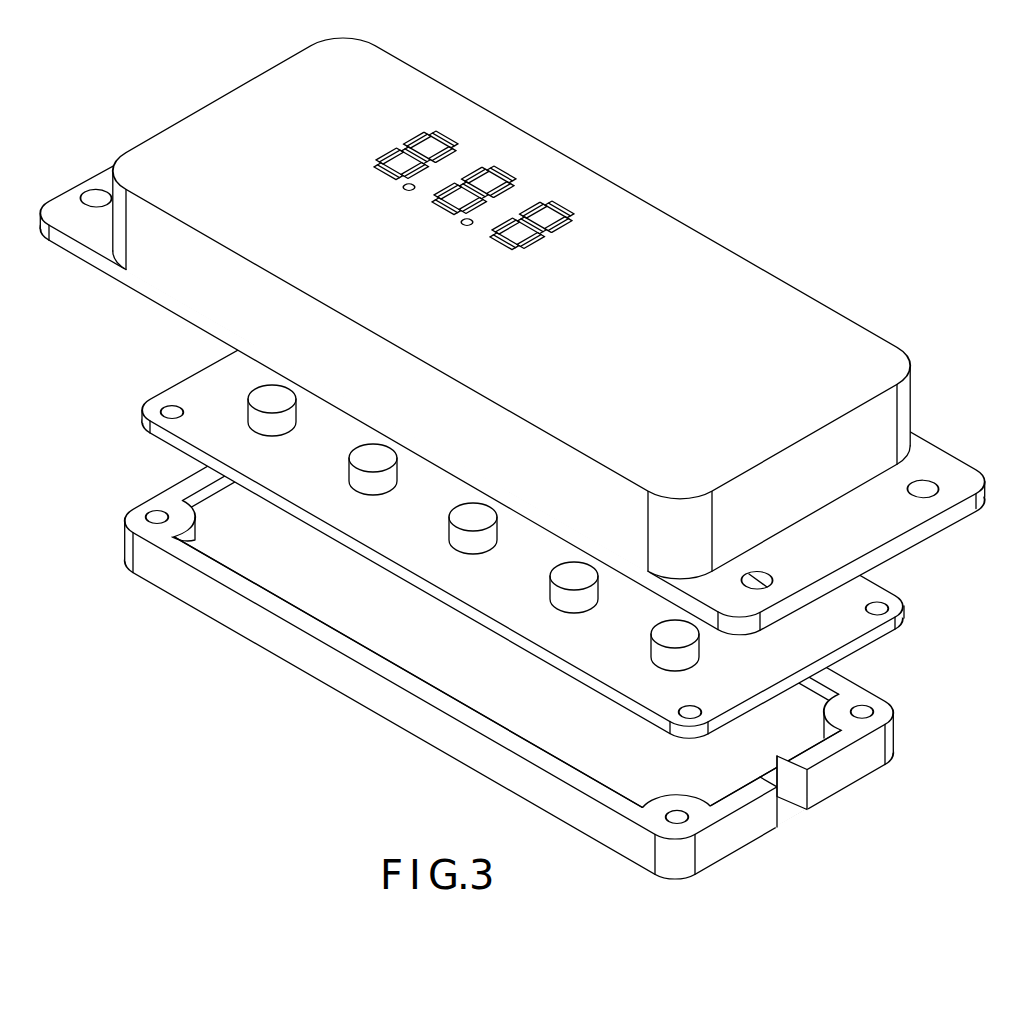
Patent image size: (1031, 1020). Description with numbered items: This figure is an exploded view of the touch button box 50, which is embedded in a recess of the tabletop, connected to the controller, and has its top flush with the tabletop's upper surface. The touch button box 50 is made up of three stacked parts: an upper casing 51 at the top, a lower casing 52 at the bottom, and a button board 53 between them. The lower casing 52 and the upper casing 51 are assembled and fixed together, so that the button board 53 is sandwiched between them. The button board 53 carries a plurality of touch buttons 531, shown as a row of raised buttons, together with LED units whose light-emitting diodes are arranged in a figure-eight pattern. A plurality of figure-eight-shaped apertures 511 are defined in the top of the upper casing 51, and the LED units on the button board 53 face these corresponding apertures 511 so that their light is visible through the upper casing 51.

The touch button box 50 is at (512, 456).
The upper casing 51 is at (512, 334).
The 8-shaped apertures 511 is at (507, 177).
The lower casing 52 is at (380, 682).
The button board 53 is at (488, 514).
The touch buttons 531 is at (267, 410).